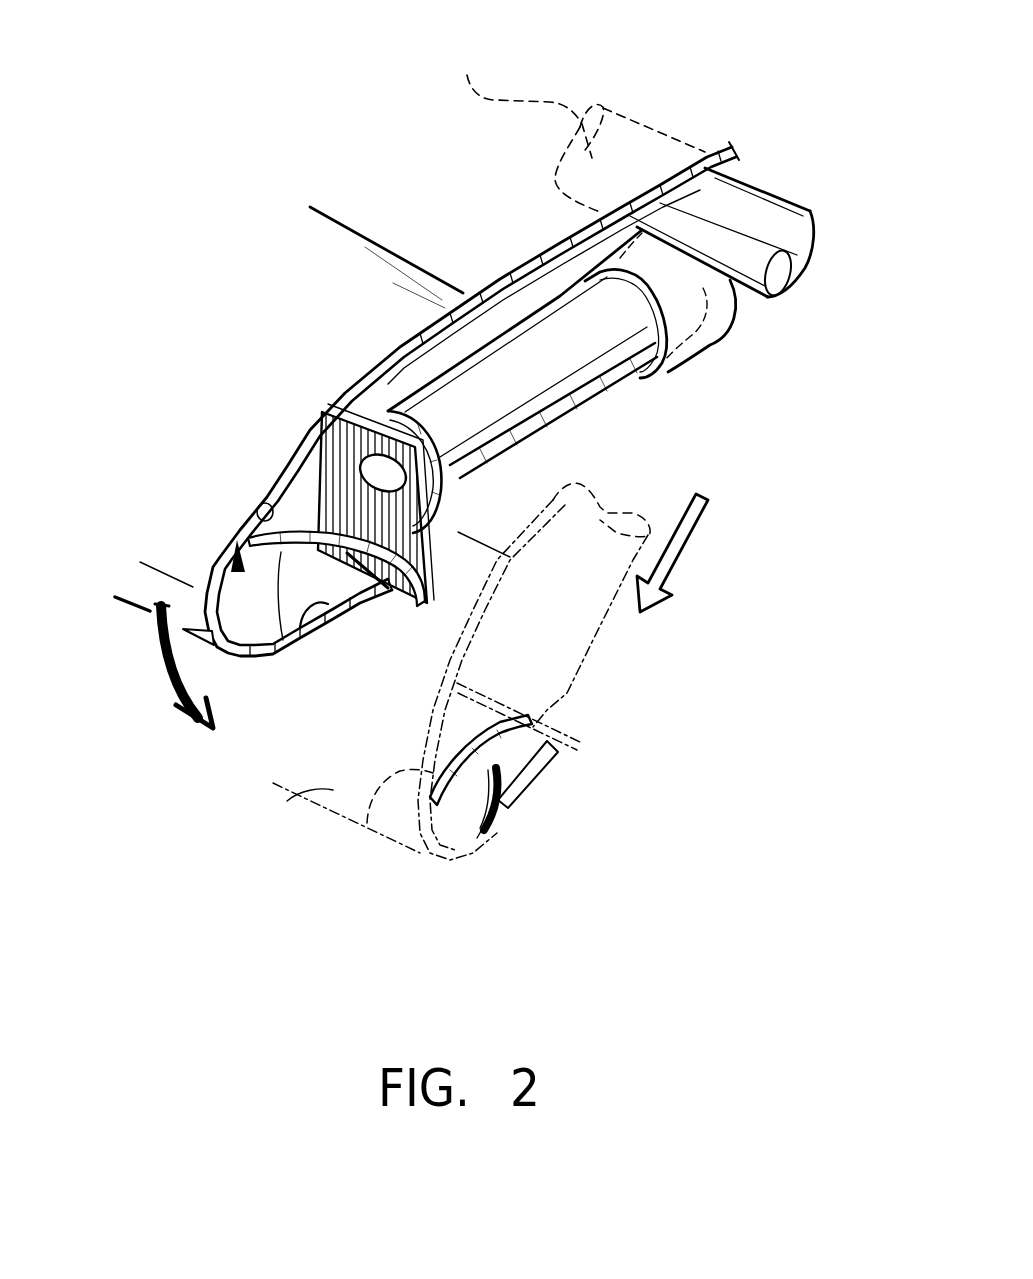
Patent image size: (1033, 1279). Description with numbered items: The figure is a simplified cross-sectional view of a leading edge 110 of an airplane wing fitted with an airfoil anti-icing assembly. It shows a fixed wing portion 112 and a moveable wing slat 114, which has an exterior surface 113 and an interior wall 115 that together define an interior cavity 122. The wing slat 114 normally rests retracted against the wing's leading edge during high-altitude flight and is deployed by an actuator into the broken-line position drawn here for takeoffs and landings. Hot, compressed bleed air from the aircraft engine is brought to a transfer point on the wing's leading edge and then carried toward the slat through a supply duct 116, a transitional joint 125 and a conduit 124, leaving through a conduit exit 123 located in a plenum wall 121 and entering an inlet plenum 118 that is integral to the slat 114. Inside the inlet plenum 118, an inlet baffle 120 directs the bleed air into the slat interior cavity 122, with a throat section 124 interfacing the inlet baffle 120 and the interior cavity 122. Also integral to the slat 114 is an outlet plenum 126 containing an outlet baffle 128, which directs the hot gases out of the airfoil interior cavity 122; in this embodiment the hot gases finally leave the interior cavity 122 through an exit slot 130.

The leading edge 110 is at (240, 235).
The fixed wing portion 112 is at (535, 250).
The exterior surface 113 is at (288, 466).
The wing slat 114 is at (390, 340).
The interior wall 115 is at (242, 522).
The supply duct 116 is at (572, 115).
The inlet plenum 118 is at (287, 493).
The inlet baffle 120 is at (268, 650).
The plenum wall 121 is at (430, 522).
The interior cavity 122 is at (168, 640).
The conduit exit 123 is at (318, 428).
The conduit 124 is at (242, 628).
The transitional joint 125 is at (705, 316).
The outlet plenum 126 is at (355, 612).
The outlet baffle 128 is at (308, 612).
The exit slot 130 is at (377, 600).